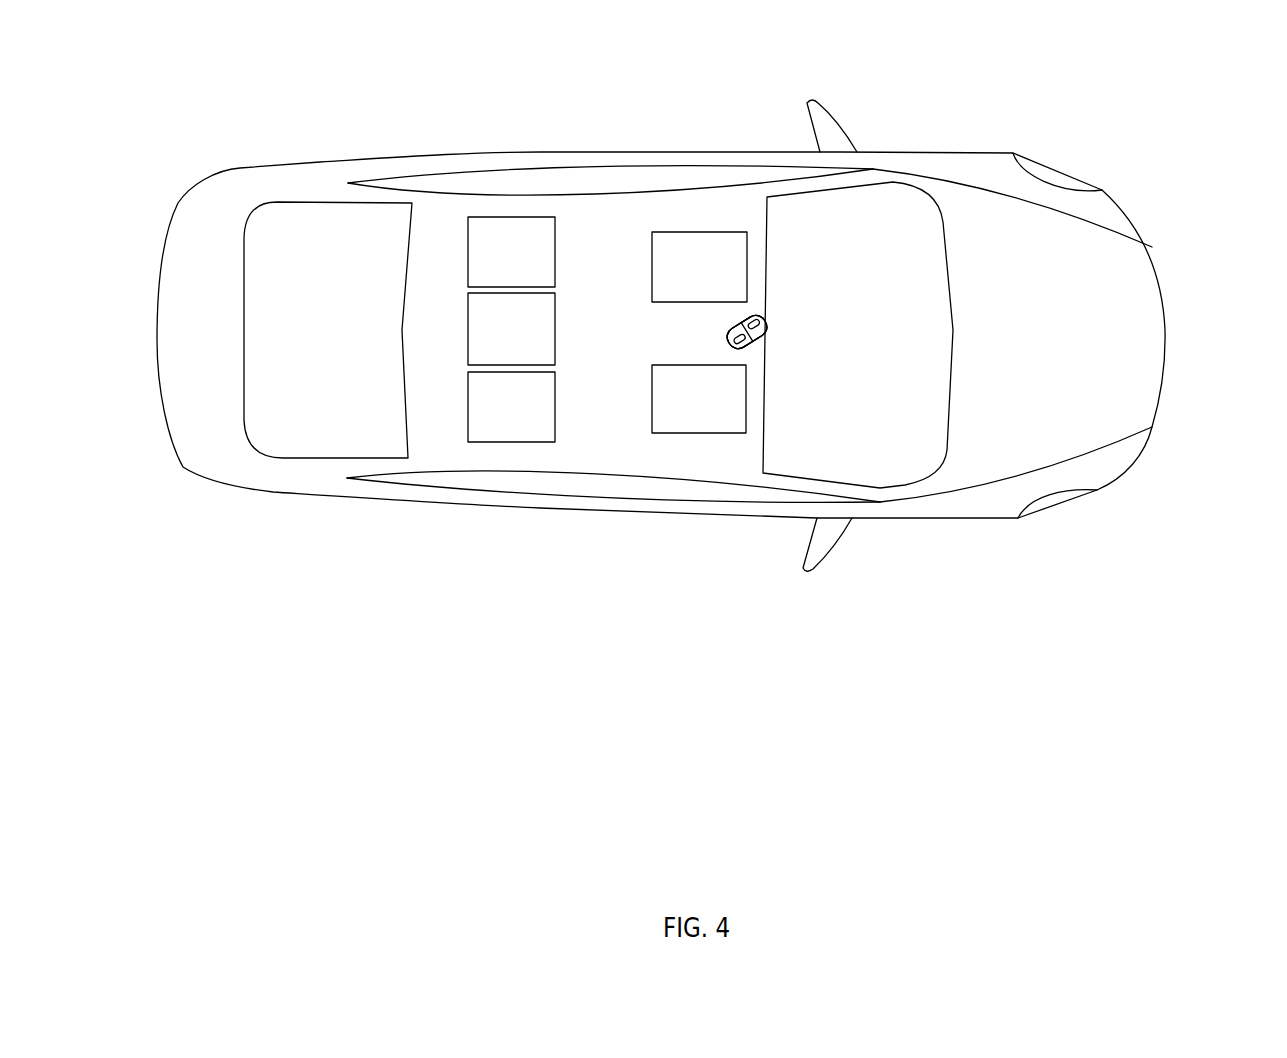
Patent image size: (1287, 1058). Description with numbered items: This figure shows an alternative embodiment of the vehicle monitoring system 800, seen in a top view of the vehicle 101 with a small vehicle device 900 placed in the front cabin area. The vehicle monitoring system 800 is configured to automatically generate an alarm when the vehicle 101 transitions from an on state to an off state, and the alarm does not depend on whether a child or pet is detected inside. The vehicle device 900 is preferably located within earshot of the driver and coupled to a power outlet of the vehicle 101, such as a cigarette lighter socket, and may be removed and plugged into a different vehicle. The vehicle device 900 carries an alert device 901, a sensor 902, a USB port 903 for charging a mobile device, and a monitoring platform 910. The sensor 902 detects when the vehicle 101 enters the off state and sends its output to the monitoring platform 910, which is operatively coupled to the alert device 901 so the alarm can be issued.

The vehicle 101 is at (323, 162).
The vehicle monitoring system 800 is at (720, 293).
The vehicle device 900 is at (779, 337).
The alert device 901 is at (746, 340).
The sensor 902 is at (727, 308).
The USB port 903 is at (755, 318).
The monitoring platform 910 is at (754, 365).